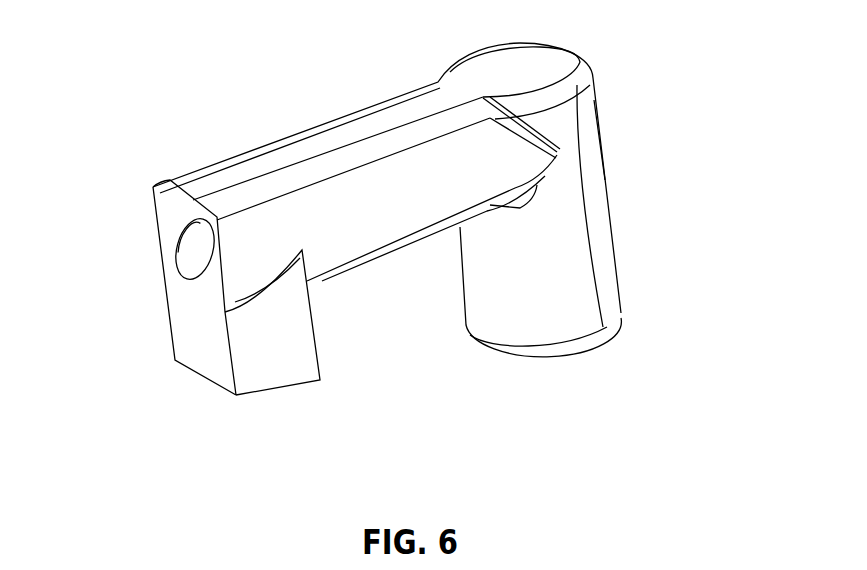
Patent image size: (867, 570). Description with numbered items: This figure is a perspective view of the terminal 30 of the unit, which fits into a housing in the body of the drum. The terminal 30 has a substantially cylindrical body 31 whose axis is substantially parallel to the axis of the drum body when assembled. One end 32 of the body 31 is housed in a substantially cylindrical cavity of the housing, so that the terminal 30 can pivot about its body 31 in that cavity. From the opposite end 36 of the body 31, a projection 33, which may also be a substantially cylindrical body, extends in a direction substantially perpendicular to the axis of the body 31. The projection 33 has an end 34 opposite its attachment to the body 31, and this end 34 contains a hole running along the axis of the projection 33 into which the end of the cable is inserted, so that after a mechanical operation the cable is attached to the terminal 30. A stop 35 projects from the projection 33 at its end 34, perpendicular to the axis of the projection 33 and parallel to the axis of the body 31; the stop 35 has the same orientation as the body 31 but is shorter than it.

The terminal 30 is at (396, 200).
The body 31 is at (616, 162).
The end 32 is at (599, 200).
The projection 33 is at (390, 122).
The end 34 is at (157, 188).
The stop 35 is at (277, 337).
The end 36 is at (563, 118).